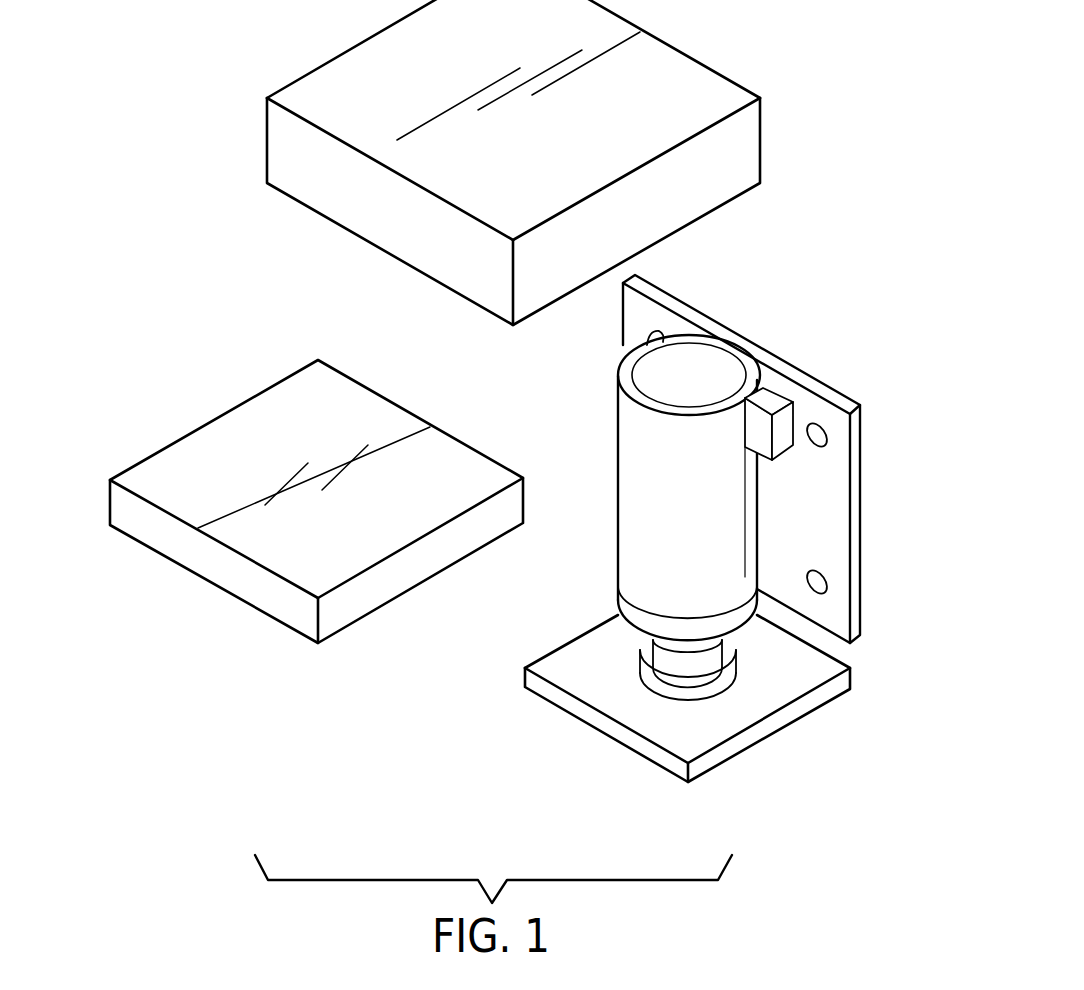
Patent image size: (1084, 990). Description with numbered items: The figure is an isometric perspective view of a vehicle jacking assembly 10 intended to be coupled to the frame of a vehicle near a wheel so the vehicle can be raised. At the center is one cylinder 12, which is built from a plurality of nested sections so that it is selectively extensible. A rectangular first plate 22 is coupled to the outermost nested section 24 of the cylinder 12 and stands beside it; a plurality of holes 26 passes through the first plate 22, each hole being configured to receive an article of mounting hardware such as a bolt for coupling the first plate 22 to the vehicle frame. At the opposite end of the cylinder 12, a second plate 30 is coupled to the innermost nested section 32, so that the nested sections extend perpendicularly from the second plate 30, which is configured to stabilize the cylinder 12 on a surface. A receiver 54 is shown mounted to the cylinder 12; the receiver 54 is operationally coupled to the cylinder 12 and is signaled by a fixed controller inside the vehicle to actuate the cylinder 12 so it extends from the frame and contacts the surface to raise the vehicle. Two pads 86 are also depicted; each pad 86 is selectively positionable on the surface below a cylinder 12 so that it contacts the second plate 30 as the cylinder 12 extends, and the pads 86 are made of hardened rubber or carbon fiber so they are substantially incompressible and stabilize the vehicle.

The vehicle jacking assembly 10 is at (617, 417).
The pads 86 is at (133, 467).
The cylinder 12 is at (618, 552).
The outermost nested section 24 is at (667, 583).
The first plate 22 is at (858, 577).
The holes 26 is at (826, 572).
The receiver 54 is at (762, 380).
The second plate 30 is at (775, 725).
The innermost nested section 32 is at (682, 668).